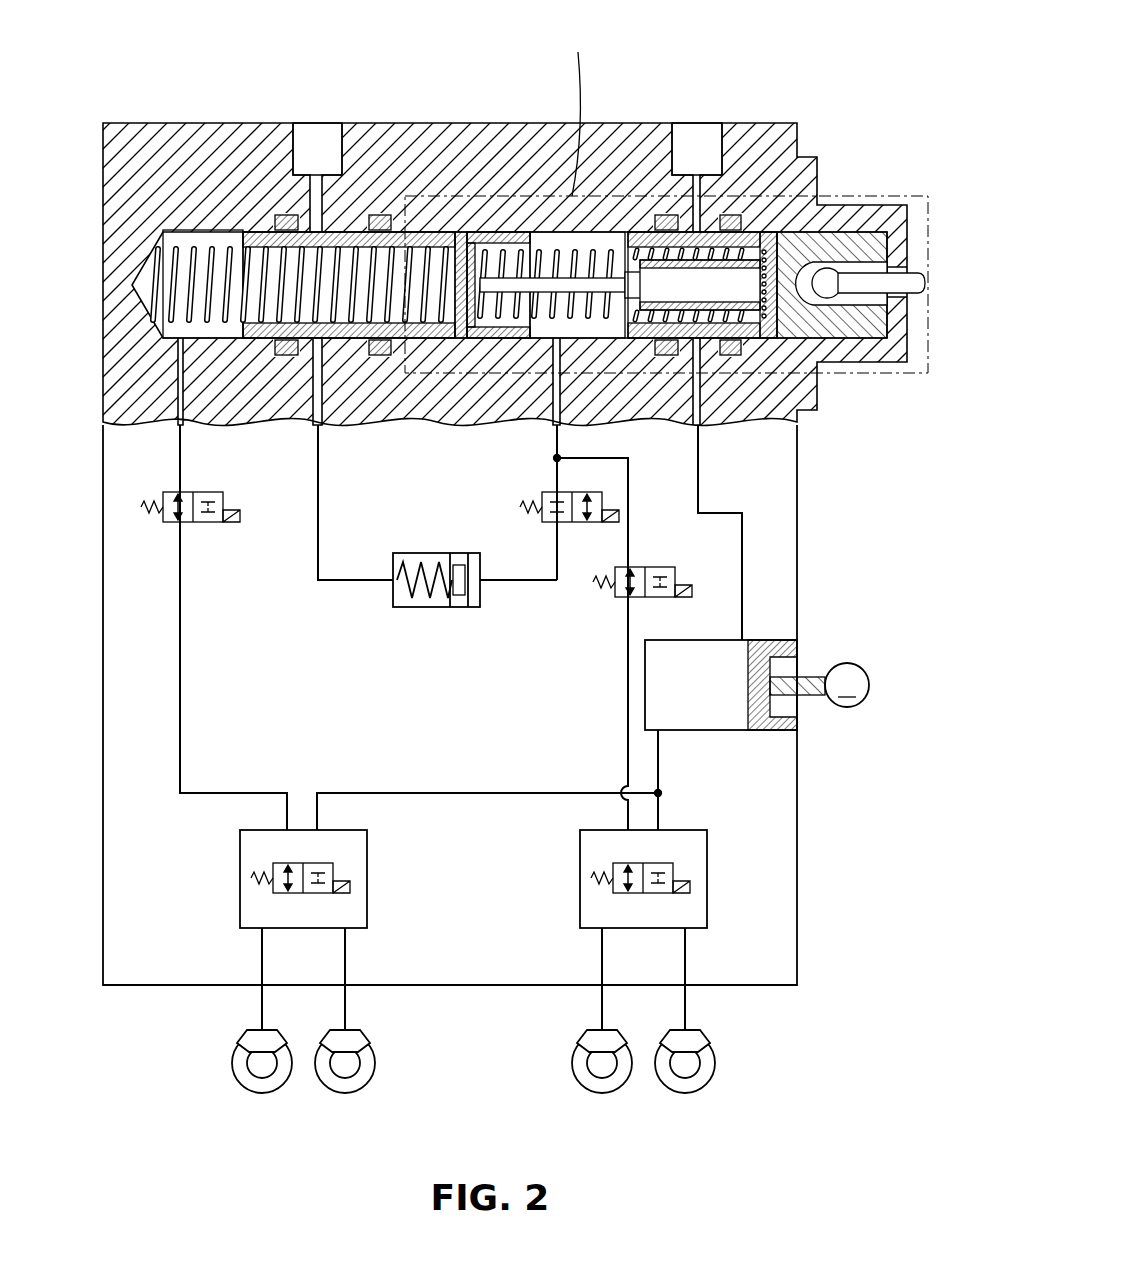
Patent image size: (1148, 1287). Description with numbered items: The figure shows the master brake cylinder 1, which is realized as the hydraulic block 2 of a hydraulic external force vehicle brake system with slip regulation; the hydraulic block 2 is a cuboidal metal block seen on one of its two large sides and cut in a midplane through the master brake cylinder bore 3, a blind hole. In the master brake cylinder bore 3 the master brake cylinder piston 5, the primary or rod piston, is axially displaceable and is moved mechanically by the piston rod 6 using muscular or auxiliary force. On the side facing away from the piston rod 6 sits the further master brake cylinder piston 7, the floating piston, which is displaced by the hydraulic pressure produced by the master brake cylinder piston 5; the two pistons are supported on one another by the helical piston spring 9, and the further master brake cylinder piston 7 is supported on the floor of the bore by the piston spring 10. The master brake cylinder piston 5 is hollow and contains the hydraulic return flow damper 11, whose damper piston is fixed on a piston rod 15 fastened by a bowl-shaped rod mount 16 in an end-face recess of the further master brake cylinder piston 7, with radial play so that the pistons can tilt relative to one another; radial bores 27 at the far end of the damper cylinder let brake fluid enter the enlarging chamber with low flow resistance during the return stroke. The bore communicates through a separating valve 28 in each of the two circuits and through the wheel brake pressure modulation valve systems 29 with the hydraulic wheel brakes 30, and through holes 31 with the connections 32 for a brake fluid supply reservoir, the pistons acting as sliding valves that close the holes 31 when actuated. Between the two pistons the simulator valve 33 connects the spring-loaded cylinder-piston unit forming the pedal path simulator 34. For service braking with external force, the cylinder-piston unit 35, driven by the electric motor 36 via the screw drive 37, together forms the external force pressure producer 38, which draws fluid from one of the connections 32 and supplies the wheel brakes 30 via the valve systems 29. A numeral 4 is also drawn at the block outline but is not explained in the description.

The master brake cylinder 1 is at (574, 557).
The hydraulic block 2 is at (574, 241).
The master brake cylinder bore 3 is at (598, 232).
The hydraulic block 4 is at (103, 928).
The master brake cylinder piston 5 is at (775, 232).
The piston rod 6 is at (912, 276).
The further master brake cylinder piston 7 is at (412, 175).
The piston spring 9 is at (535, 280).
The piston spring 10 is at (355, 228).
The return flow damper 11 is at (643, 214).
The piston rod 15 is at (500, 255).
The rod mount 16 is at (470, 235).
The radial bores 27 is at (768, 285).
The separating valve 28 is at (200, 522).
The wheel brake pressure modulation valve systems 29 is at (350, 855).
The hydraulic wheel brakes 30 is at (242, 1035).
The holes 31 is at (305, 198).
The connections 32 is at (315, 148).
The simulator valve 33 is at (555, 492).
The pedal path simulator 34 is at (437, 607).
The cylinder-piston unit 35 is at (722, 712).
The electric motor 36 is at (872, 707).
The screw drive 37 is at (815, 700).
The external force pressure producer 38 is at (772, 688).